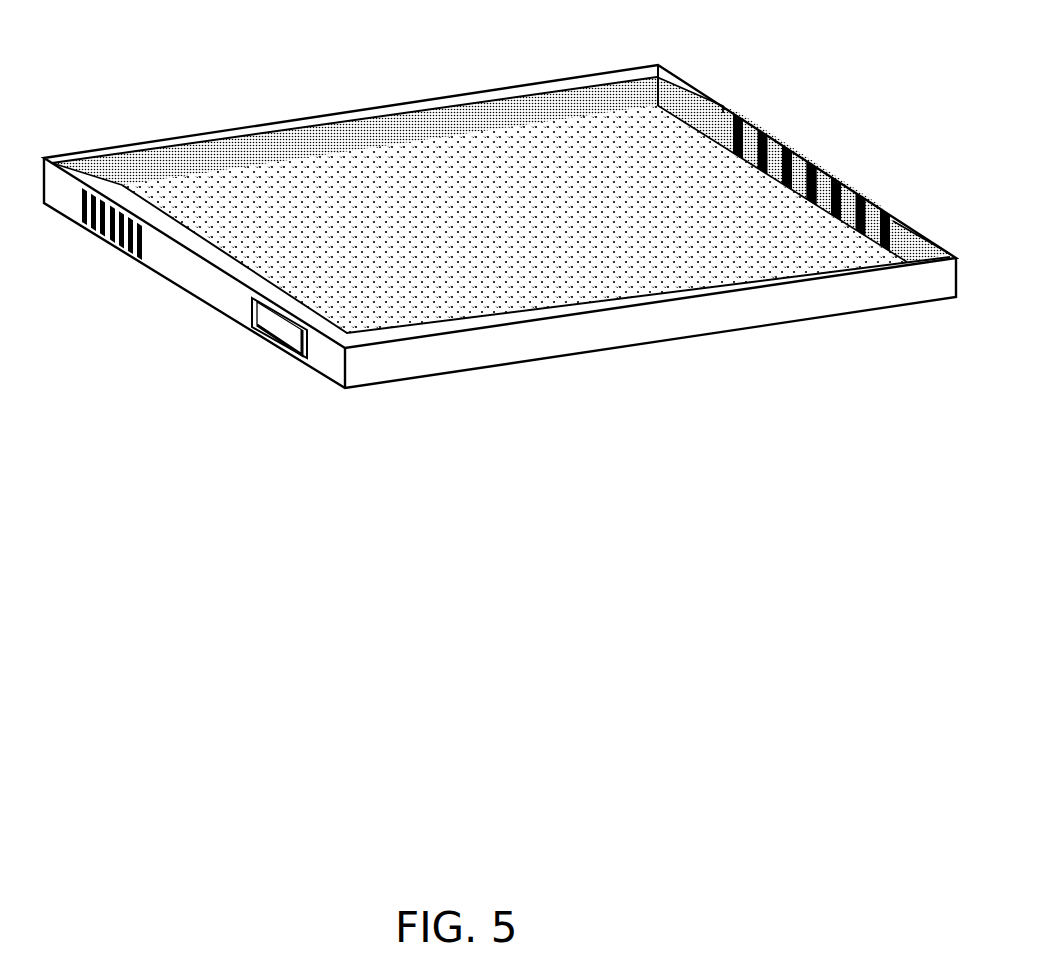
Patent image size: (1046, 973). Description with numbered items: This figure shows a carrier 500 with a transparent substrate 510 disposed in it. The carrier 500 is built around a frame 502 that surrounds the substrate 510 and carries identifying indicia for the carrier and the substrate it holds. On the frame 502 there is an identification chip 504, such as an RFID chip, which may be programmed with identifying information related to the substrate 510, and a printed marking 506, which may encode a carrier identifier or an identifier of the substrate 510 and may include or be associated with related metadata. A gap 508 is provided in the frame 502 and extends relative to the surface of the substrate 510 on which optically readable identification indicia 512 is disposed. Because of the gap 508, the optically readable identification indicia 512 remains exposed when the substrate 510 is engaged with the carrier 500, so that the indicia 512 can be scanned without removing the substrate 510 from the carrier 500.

The carrier 500 is at (500, 271).
The frame 502 is at (512, 350).
The identification chip 504 is at (270, 324).
The printed marking 506 is at (115, 237).
The gap 508 is at (789, 122).
The transparent substrate 510 is at (397, 120).
The optically readable identification indicia 512 is at (818, 176).